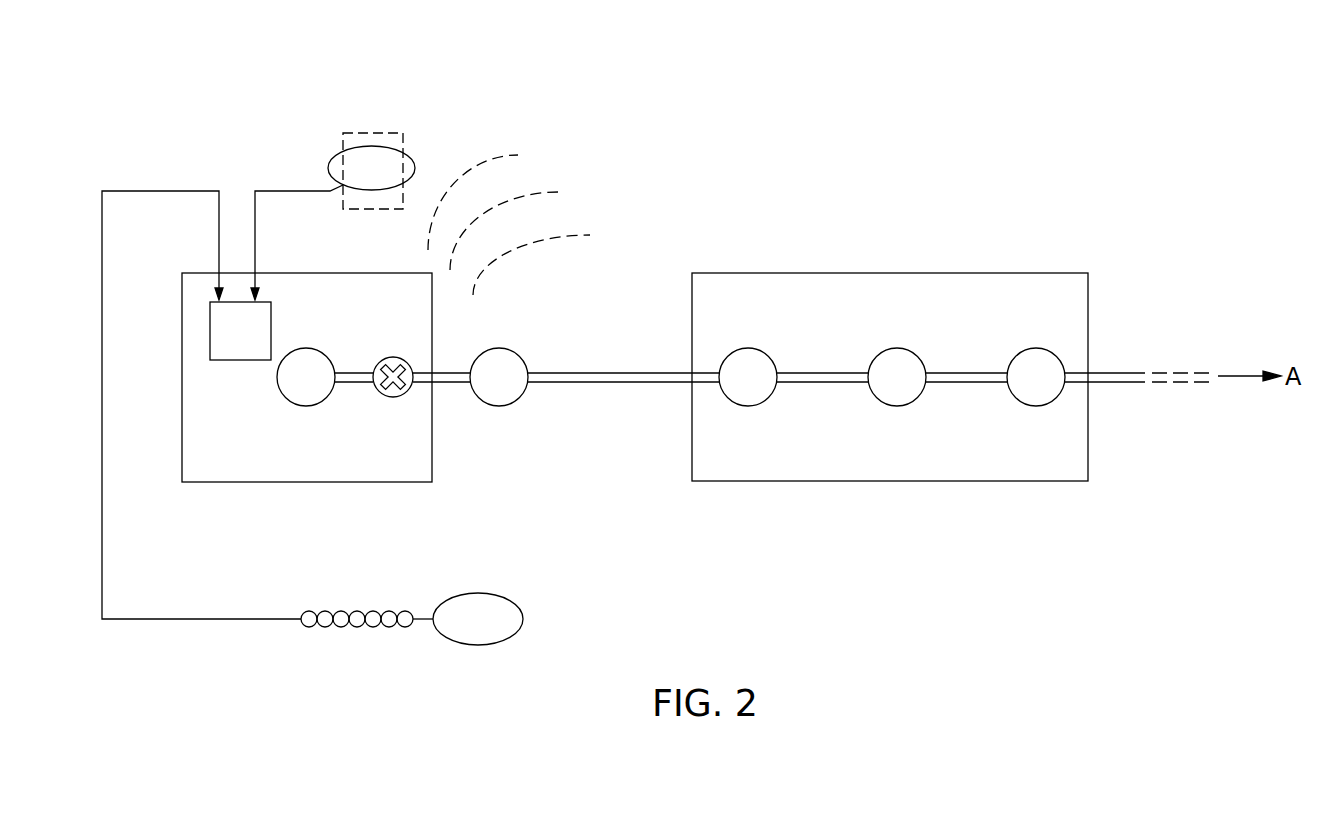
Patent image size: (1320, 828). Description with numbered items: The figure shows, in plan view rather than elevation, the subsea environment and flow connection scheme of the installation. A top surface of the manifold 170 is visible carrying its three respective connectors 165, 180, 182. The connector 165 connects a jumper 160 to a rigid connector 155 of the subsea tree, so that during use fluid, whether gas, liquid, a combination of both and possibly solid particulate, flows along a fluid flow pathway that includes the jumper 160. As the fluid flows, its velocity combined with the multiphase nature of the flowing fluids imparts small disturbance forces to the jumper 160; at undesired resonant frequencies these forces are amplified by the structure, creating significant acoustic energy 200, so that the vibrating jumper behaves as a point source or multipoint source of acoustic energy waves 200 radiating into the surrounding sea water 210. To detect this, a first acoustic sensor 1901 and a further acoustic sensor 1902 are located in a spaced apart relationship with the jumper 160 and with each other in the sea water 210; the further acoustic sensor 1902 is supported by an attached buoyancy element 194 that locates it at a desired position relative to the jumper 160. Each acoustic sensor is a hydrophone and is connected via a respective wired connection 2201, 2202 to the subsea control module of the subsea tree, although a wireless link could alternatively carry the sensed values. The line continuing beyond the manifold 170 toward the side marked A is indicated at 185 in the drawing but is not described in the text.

The acoustic energy 200 is at (922, 63).
The sea water 210 is at (713, 151).
The buoyancy element 194 is at (377, 132).
The further acoustic sensor 1902 is at (415, 168).
The first acoustic sensor 1901 is at (523, 619).
The wired connection 2202 is at (275, 188).
The wired connection 2201 is at (205, 624).
The rigid connector 155 is at (502, 408).
The jumper 160 is at (635, 368).
The connector 165 is at (750, 347).
The manifold 170 is at (1038, 483).
The connector 180 is at (898, 347).
The connector 182 is at (1037, 347).
The line continuation 185 is at (1178, 382).